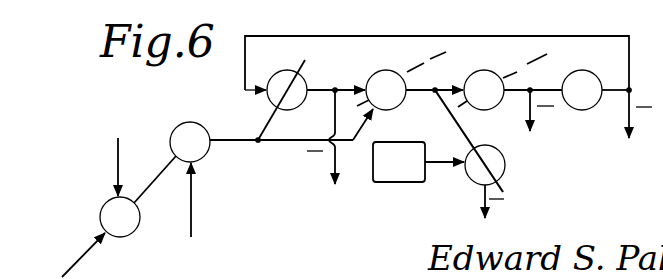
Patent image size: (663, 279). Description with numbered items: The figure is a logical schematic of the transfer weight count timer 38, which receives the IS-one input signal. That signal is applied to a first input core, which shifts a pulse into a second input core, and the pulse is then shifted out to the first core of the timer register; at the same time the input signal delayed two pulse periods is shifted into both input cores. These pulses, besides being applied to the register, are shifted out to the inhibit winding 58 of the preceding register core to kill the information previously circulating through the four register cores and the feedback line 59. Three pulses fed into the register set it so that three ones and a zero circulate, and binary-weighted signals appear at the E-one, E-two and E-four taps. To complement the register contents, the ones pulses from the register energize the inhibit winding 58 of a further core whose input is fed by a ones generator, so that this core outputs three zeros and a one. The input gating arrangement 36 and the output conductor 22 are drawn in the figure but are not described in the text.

The input gating circuit 36 is at (162, 120).
The transfer weight count timer 38 is at (592, 33).
The inhibit winding 58 is at (287, 70).
The feedback line 59 is at (441, 36).
The output conductor 22 is at (477, 191).